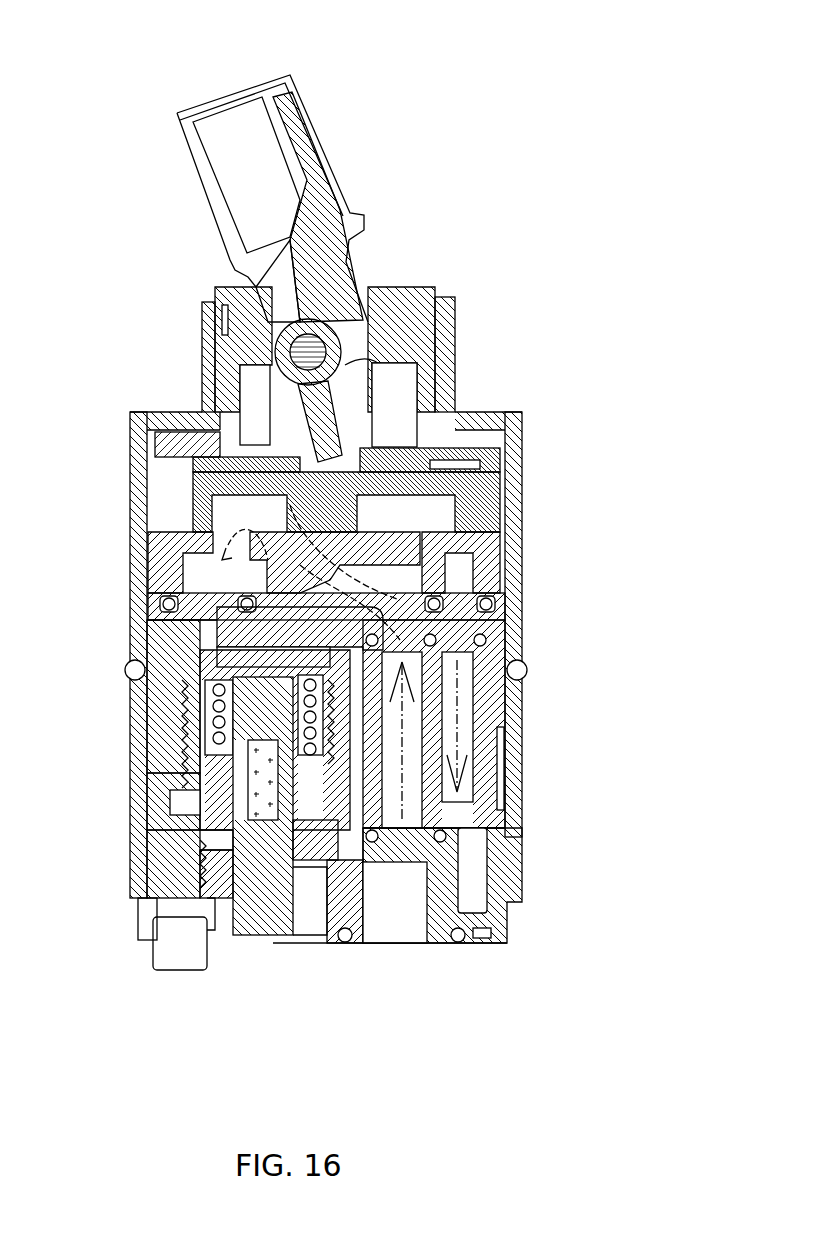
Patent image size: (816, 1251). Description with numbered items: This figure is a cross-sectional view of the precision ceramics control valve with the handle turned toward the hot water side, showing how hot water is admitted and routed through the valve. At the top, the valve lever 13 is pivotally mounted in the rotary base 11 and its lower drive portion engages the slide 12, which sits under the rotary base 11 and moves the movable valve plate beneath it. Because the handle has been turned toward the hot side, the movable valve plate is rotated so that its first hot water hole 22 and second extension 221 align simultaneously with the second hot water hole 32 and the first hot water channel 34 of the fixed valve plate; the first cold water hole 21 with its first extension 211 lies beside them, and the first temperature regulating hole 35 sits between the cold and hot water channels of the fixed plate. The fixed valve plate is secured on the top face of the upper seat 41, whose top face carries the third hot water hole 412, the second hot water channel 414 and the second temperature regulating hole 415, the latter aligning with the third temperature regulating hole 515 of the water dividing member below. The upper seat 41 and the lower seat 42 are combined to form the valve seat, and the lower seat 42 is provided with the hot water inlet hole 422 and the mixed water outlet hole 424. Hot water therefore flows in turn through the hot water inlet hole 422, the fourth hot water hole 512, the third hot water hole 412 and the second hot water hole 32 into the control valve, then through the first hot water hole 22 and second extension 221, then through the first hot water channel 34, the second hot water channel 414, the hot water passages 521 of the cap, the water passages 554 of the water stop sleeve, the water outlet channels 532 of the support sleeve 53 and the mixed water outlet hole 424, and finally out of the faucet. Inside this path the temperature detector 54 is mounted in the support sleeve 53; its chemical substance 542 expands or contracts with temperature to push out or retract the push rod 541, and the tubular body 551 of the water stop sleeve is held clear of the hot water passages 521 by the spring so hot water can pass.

The valve lever 13 is at (205, 110).
The rotary base 11 is at (195, 350).
The slide 12 is at (440, 470).
The first hot water hole 22 is at (190, 480).
The second extension 221 is at (327, 452).
The first cold water hole 21 is at (430, 500).
The first extension 211 is at (346, 502).
The first hot water channel 34 is at (225, 545).
The first temperature regulating hole 35 is at (500, 548).
The second hot water hole 32 is at (303, 587).
The second hot water channel 414 is at (190, 590).
The second temperature regulating hole 415 is at (480, 593).
The third hot water hole 412 is at (480, 640).
The upper seat 41 is at (510, 742).
The third temperature regulating hole 515 is at (527, 670).
The hot water passages 521 is at (135, 665).
The fourth hot water hole 512 is at (470, 828).
The tubular body 551 is at (175, 745).
The push rod 541 is at (195, 718).
The water passages 554 is at (185, 790).
The chemical substance 542 is at (180, 830).
The water outlet channels 532 is at (150, 905).
The support sleeve 53 is at (160, 955).
The temperature detector 54 is at (255, 935).
The mixed water outlet hole 424 is at (320, 925).
The lower seat 42 is at (520, 875).
The hot water inlet hole 422 is at (462, 935).